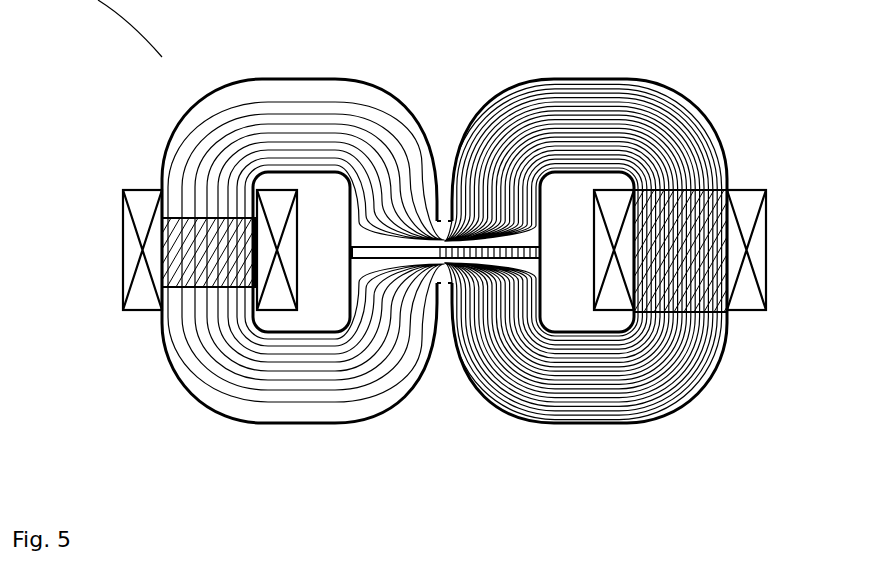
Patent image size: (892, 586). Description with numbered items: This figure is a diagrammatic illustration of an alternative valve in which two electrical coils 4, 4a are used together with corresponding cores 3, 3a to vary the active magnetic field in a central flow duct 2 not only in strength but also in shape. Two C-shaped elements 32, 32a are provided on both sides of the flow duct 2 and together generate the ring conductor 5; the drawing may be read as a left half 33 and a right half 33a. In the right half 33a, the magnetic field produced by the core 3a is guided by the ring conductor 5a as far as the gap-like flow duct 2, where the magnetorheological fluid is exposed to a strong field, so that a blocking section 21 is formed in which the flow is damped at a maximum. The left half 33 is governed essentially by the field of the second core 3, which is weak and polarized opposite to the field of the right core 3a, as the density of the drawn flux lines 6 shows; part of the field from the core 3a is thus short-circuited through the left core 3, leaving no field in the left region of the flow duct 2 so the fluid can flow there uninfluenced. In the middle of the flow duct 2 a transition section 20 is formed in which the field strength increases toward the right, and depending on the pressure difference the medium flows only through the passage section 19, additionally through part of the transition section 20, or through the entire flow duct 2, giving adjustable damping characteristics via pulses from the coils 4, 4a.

The flow duct 2 is at (442, 238).
The core 3 is at (180, 272).
The core 3a is at (718, 312).
The electrical coil 4 is at (135, 243).
The electrical coil 4a is at (746, 205).
The ring conductor 5 is at (270, 98).
The ring conductor 5a is at (588, 110).
The magnetic flux lines in right core 6 is at (652, 98).
The passage section 19 is at (372, 259).
The transition section 20 is at (443, 262).
The blocking section 21 is at (495, 263).
The C-shaped element 32 is at (203, 405).
The C-shaped element 32a is at (672, 413).
The left half 33 is at (142, 93).
The right half 33a is at (744, 93).